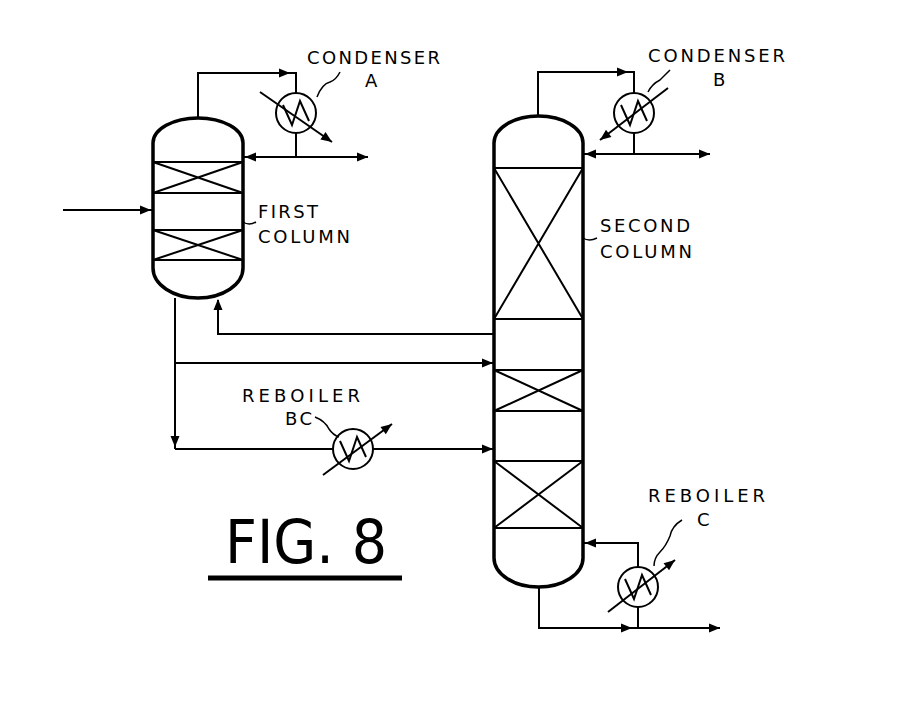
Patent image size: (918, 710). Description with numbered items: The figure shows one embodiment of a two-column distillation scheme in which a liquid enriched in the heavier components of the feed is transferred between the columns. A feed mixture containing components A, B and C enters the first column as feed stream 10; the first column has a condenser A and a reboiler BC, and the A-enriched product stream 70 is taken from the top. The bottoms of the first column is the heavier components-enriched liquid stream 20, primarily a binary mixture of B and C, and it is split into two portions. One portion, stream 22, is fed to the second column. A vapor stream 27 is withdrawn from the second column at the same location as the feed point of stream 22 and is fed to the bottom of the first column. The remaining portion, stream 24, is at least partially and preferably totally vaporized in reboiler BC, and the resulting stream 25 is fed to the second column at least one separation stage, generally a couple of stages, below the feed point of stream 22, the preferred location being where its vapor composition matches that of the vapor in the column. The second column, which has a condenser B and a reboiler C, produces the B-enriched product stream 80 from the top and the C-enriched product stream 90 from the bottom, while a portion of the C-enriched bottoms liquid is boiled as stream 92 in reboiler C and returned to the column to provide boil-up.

The feed stream 10 is at (95, 210).
The heavier components-enriched liquid stream 20 is at (175, 331).
The first portion stream 22 is at (398, 363).
The remaining portion stream 24 is at (239, 451).
The vaporized stream 25 is at (426, 451).
The vapor stream 27 is at (352, 334).
The A-enriched product stream 70 is at (330, 158).
The B-enriched product stream 80 is at (690, 155).
The C-enriched product stream 90 is at (674, 628).
The boiled bottoms liquid stream 92 is at (617, 543).